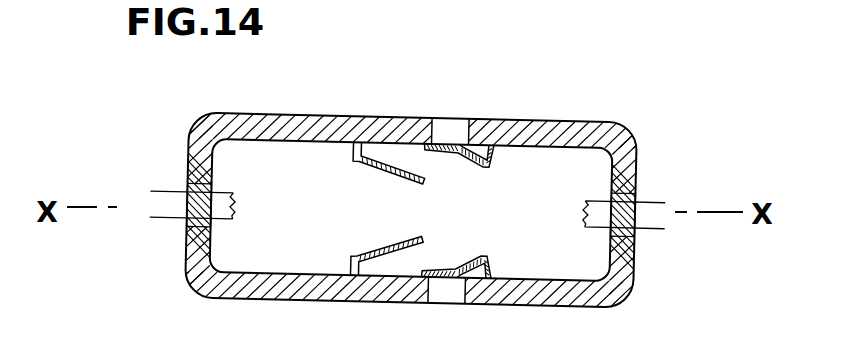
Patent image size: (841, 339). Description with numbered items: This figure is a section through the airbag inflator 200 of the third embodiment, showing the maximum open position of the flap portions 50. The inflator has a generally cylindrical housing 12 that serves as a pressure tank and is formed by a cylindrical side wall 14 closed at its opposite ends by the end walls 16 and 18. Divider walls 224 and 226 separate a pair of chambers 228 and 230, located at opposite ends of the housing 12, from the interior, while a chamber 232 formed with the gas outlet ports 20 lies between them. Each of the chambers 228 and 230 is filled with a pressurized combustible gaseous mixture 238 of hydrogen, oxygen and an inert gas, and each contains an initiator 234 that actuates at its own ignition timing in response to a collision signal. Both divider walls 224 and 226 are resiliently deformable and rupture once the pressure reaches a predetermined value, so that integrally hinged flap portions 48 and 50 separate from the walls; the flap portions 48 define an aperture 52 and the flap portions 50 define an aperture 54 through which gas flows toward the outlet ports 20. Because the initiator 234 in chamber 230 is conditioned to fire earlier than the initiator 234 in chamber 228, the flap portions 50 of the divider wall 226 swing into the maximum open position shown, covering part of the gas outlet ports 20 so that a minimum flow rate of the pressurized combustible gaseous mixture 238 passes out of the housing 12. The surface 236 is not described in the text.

The housing 12 is at (260, 113).
The cylindrical side wall 14 is at (225, 112).
The end wall 16 is at (187, 162).
The end wall 18 is at (637, 158).
The gas outlet port 20 is at (437, 127).
The flap portion 48 is at (383, 152).
The flap portion 50 is at (461, 145).
The aperture 52 is at (358, 247).
The aperture 54 is at (483, 242).
The airbag inflator 200 is at (688, 135).
The divider wall 224 is at (347, 135).
The divider wall 226 is at (485, 143).
The chamber 228 is at (263, 157).
The chamber 230 is at (532, 165).
The chamber 232 is at (402, 262).
The initiator 234 is at (638, 195).
The inner top surface 236 is at (293, 170).
The pressurized combustible gaseous mixture 238 is at (552, 180).